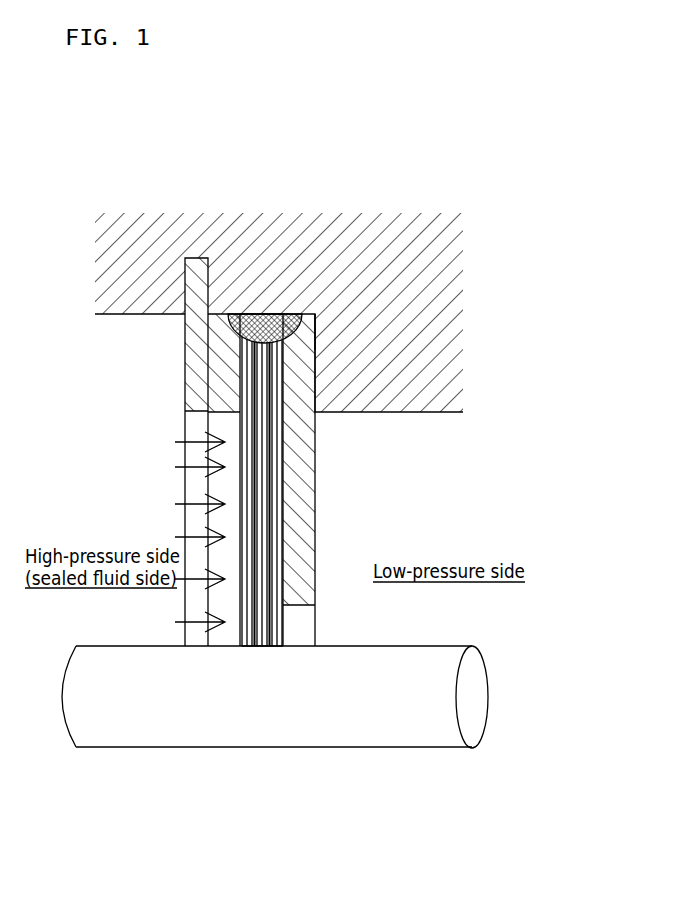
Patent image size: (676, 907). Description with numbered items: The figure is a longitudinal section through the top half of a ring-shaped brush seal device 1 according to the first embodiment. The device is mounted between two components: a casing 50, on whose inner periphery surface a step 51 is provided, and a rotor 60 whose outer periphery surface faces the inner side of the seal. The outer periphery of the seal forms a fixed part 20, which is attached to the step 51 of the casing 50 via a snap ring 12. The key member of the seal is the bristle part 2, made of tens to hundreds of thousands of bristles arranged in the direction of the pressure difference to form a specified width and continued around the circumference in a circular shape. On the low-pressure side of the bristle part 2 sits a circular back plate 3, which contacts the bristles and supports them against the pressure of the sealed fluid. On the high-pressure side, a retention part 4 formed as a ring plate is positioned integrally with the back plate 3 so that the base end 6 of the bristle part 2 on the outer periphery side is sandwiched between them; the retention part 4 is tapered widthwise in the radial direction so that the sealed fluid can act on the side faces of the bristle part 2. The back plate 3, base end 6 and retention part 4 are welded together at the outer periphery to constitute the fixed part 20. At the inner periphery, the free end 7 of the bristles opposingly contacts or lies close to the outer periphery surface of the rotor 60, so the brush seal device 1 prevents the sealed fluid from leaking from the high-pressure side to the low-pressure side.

The brush seal device 1 is at (200, 442).
The bristle part 2 is at (266, 533).
The back plate 3 is at (305, 481).
The retention part 4 is at (207, 393).
The base end 6 is at (255, 313).
The free end 7 is at (265, 648).
The snap ring 12 is at (183, 257).
The fixed part 20 is at (283, 313).
The casing 50 is at (430, 343).
The step 51 is at (316, 334).
The rotor 60 is at (400, 707).